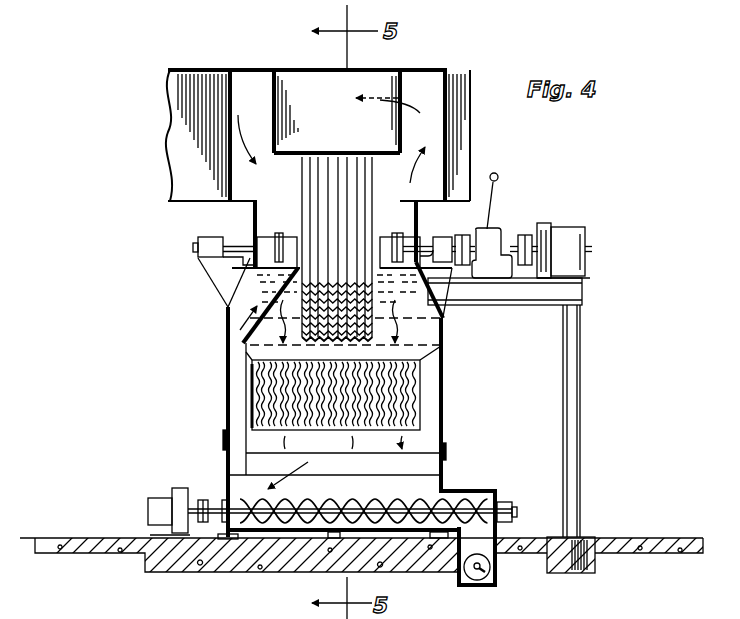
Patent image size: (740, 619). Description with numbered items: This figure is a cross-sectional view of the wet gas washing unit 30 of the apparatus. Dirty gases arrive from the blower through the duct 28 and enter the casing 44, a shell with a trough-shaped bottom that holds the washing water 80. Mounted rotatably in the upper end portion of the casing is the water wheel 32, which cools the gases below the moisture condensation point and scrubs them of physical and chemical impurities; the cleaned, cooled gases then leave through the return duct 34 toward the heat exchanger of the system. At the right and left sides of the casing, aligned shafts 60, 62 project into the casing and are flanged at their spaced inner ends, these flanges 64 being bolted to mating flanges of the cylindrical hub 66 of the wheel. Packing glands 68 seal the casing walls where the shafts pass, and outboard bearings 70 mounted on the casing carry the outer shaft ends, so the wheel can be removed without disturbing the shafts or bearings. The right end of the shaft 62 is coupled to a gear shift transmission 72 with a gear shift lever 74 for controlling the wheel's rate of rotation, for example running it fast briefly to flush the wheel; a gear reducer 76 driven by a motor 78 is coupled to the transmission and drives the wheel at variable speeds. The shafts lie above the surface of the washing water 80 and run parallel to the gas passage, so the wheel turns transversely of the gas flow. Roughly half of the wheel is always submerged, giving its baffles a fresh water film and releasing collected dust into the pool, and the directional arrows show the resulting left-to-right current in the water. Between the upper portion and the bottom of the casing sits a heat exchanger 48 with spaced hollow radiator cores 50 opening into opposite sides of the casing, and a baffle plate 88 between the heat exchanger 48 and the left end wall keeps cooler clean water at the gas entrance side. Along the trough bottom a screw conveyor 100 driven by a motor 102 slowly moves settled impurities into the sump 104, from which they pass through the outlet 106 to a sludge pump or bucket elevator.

The duct 28 is at (230, 68).
The gas washing unit 30 is at (224, 362).
The water wheel 32 is at (340, 158).
The return duct 34 is at (462, 70).
The casing 44 is at (444, 477).
The heat exchanger 48 is at (444, 367).
The radiator cores 50 is at (416, 392).
The shaft 60 is at (238, 237).
The shaft 62 is at (423, 247).
The flanges 64 is at (279, 236).
The hub 66 is at (384, 233).
The packing glands 68 is at (258, 235).
The outboard bearings 70 is at (200, 259).
The gear shift transmission 72 is at (502, 242).
The gear shift lever 74 is at (500, 182).
The gear reducer 76 is at (558, 224).
The motor 78 is at (590, 243).
The washing water 80 is at (418, 333).
The baffle plate 88 is at (251, 392).
The screw conveyor 100 is at (368, 496).
The motor 102 is at (172, 490).
The sump 104 is at (487, 542).
The outlet 106 is at (482, 580).